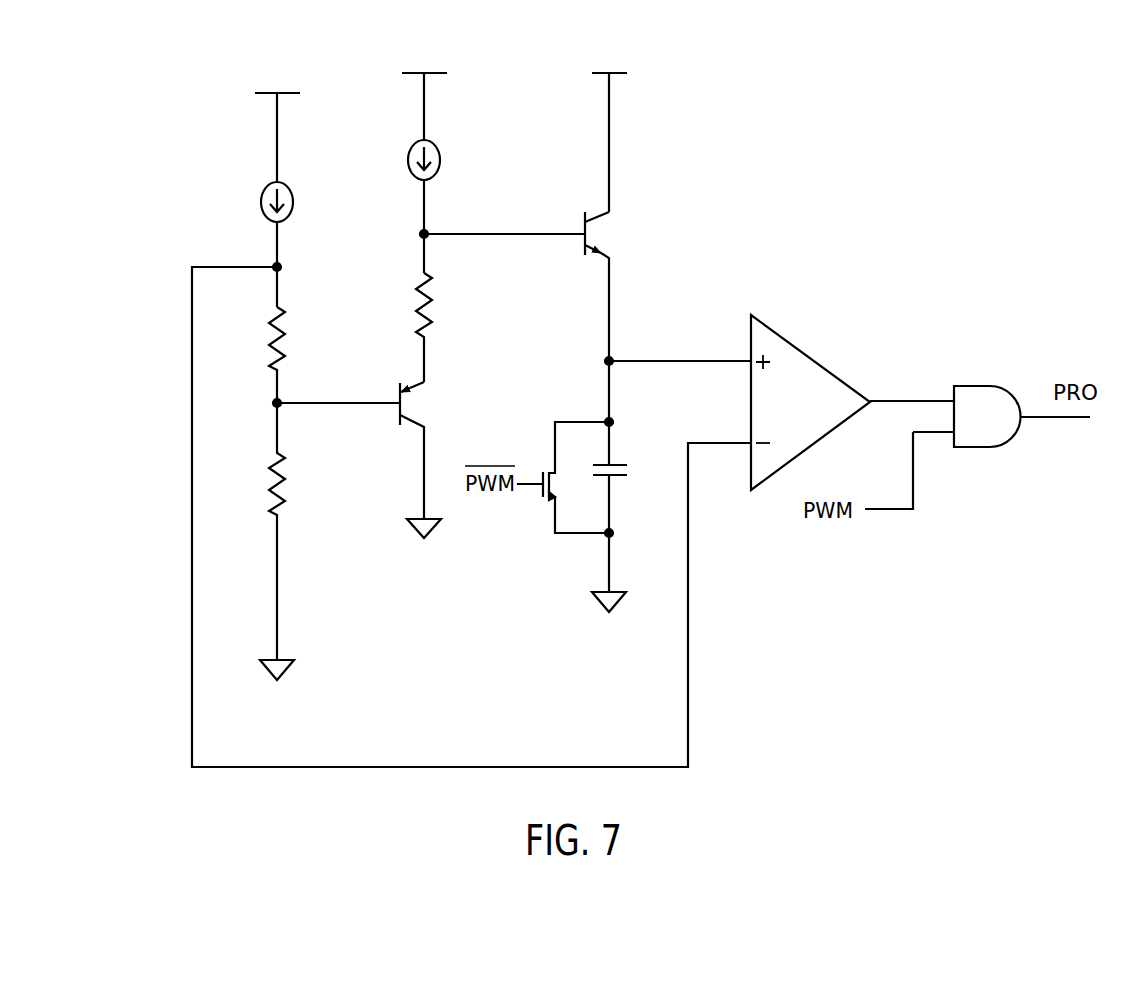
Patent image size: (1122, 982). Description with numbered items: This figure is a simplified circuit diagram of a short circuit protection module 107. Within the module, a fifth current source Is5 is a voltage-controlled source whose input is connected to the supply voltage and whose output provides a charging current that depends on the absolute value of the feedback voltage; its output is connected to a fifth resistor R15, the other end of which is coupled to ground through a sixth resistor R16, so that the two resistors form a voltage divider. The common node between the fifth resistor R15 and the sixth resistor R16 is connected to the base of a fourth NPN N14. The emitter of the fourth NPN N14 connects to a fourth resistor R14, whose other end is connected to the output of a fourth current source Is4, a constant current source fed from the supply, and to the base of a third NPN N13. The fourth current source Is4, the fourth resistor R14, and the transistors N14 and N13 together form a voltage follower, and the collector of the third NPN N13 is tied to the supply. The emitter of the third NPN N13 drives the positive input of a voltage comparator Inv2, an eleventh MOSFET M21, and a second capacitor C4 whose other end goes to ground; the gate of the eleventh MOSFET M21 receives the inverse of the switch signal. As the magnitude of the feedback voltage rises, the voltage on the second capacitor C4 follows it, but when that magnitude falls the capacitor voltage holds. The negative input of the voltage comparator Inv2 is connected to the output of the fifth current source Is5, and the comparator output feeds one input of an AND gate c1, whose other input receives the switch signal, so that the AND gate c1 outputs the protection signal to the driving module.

The short circuit protection module 107 is at (1012, 103).
The fifth current source Is5 is at (257, 244).
The fourth current source Is4 is at (444, 206).
The fifth resistor R15 is at (258, 357).
The sixth resistor R16 is at (263, 541).
The fourth resistor R14 is at (402, 327).
The fourth NPN N14 is at (359, 460).
The third NPN N13 is at (518, 317).
The eleventh MOSFET M21 is at (561, 477).
The second capacitor C4 is at (623, 517).
The voltage comparator Inv2 is at (795, 345).
The AND gate c1 is at (987, 378).